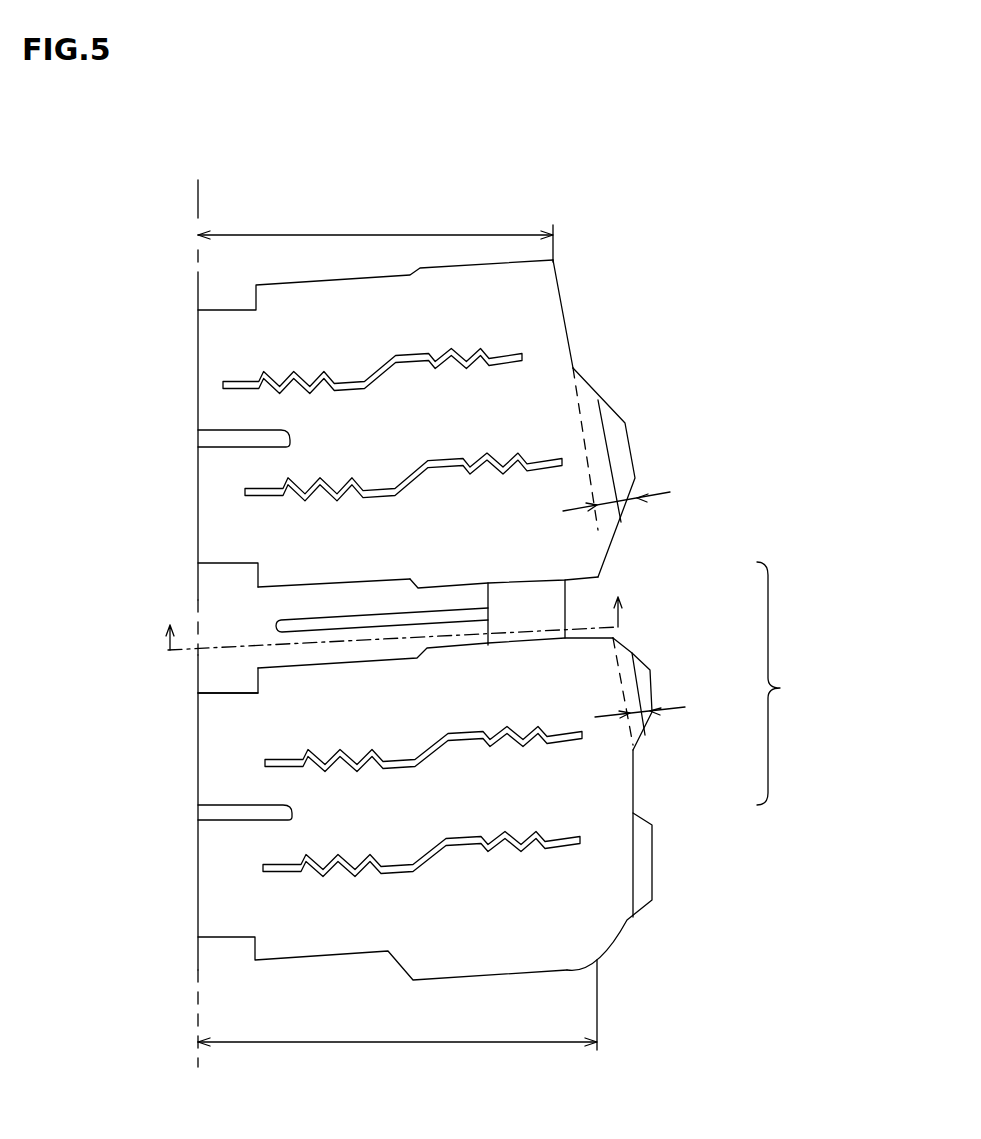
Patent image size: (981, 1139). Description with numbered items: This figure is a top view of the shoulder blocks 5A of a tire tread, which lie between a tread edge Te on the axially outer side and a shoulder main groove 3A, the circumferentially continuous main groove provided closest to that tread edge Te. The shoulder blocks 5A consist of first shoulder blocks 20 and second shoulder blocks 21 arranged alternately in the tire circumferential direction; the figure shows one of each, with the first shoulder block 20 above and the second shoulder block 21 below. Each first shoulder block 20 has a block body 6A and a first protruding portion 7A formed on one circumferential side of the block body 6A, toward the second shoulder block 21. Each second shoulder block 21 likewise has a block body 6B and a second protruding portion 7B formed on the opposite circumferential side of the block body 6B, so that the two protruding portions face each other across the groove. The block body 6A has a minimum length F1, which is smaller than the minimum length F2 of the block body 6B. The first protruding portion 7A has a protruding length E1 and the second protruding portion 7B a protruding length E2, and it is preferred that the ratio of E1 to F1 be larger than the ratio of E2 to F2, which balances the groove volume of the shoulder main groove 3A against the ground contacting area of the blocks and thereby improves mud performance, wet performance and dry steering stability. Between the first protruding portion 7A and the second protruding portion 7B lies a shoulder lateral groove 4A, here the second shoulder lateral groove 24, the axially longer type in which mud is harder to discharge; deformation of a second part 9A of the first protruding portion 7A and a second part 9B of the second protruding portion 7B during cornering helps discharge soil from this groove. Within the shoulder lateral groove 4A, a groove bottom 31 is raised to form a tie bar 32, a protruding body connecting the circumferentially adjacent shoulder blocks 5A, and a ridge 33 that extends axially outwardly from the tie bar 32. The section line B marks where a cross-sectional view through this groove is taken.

The tread edge Te is at (197, 202).
The minimum length of block body of first shoulder block F1 is at (375, 232).
The minimum length of block body of second shoulder block F2 is at (397, 1019).
The first shoulder block 20 is at (570, 550).
The second shoulder block 21 is at (575, 780).
The block body 6A is at (522, 315).
The block body 6B is at (603, 907).
The first protruding portion 7A is at (627, 397).
The second protruding portion 7B is at (623, 657).
The second part of first protruding portion 9A is at (617, 453).
The second part of second protruding portion 9B is at (645, 683).
The protruding length of first protruding portion E1 is at (632, 502).
The protruding length of second protruding portion E2 is at (647, 705).
The groove bottom 31 is at (308, 603).
The tie bar 32 is at (528, 605).
The ridge 33 is at (382, 622).
The shoulder lateral groove 4A is at (151, 622).
The second shoulder lateral groove 24 is at (230, 613).
The shoulder block 5A is at (791, 683).
The shoulder main groove 3A is at (770, 892).
The B-B line B is at (395, 617).